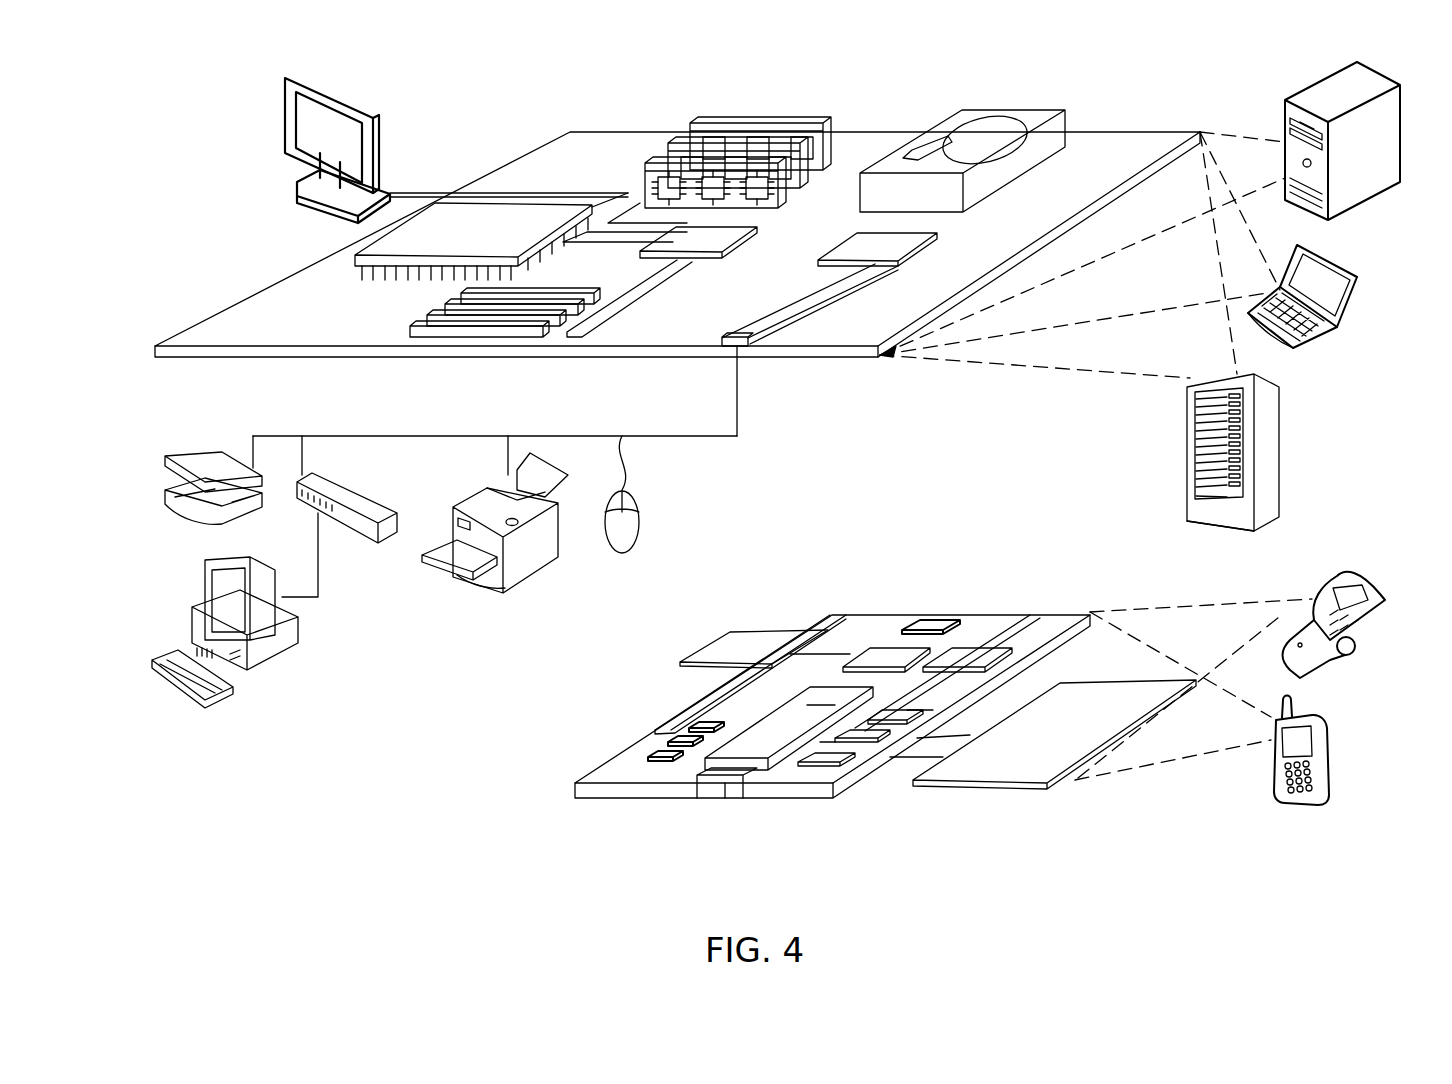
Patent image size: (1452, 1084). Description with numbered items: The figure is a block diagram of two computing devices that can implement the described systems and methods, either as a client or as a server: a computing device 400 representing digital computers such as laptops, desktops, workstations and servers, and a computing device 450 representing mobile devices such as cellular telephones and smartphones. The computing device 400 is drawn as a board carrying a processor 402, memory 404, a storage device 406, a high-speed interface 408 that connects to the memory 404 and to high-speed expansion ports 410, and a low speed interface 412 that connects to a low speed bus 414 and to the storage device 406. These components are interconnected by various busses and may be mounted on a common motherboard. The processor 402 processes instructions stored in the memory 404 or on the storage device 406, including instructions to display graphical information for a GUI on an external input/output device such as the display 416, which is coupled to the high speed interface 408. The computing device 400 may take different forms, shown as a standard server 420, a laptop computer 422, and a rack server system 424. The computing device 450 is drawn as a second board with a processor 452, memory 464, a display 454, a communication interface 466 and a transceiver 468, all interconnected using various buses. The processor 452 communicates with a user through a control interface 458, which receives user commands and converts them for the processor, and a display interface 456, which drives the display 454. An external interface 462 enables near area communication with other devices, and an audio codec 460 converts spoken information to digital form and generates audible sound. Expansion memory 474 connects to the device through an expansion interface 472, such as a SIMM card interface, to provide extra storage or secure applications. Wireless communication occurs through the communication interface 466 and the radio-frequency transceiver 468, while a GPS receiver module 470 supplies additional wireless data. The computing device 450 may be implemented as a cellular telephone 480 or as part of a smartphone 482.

The computing device 400 is at (492, 103).
The processor 402 is at (313, 258).
The memory 404 is at (706, 131).
The storage device 406 is at (955, 111).
The high-speed interface 408 is at (674, 242).
The high-speed expansion ports 410 is at (433, 314).
The low speed interface 412 is at (857, 243).
The low speed bus 414 is at (748, 346).
The display 416 is at (287, 79).
The standard server 420 is at (1286, 117).
The laptop computer 422 is at (1357, 278).
The rack server system 424 is at (1187, 480).
The computing device 450 is at (551, 799).
The processor 452 is at (761, 751).
The display 454 is at (1010, 770).
The display interface 456 is at (833, 758).
The control interface 458 is at (862, 734).
The audio codec 460 is at (897, 714).
The external interface 462 is at (723, 798).
The memory 464 is at (670, 741).
The communication interface 466 is at (889, 656).
The transceiver 468 is at (969, 656).
The GPS receiver module 470 is at (940, 621).
The expansion interface 472 is at (813, 628).
The expansion memory 474 is at (734, 631).
The cellular telephone 480 is at (1337, 576).
The smartphone 482 is at (1276, 753).